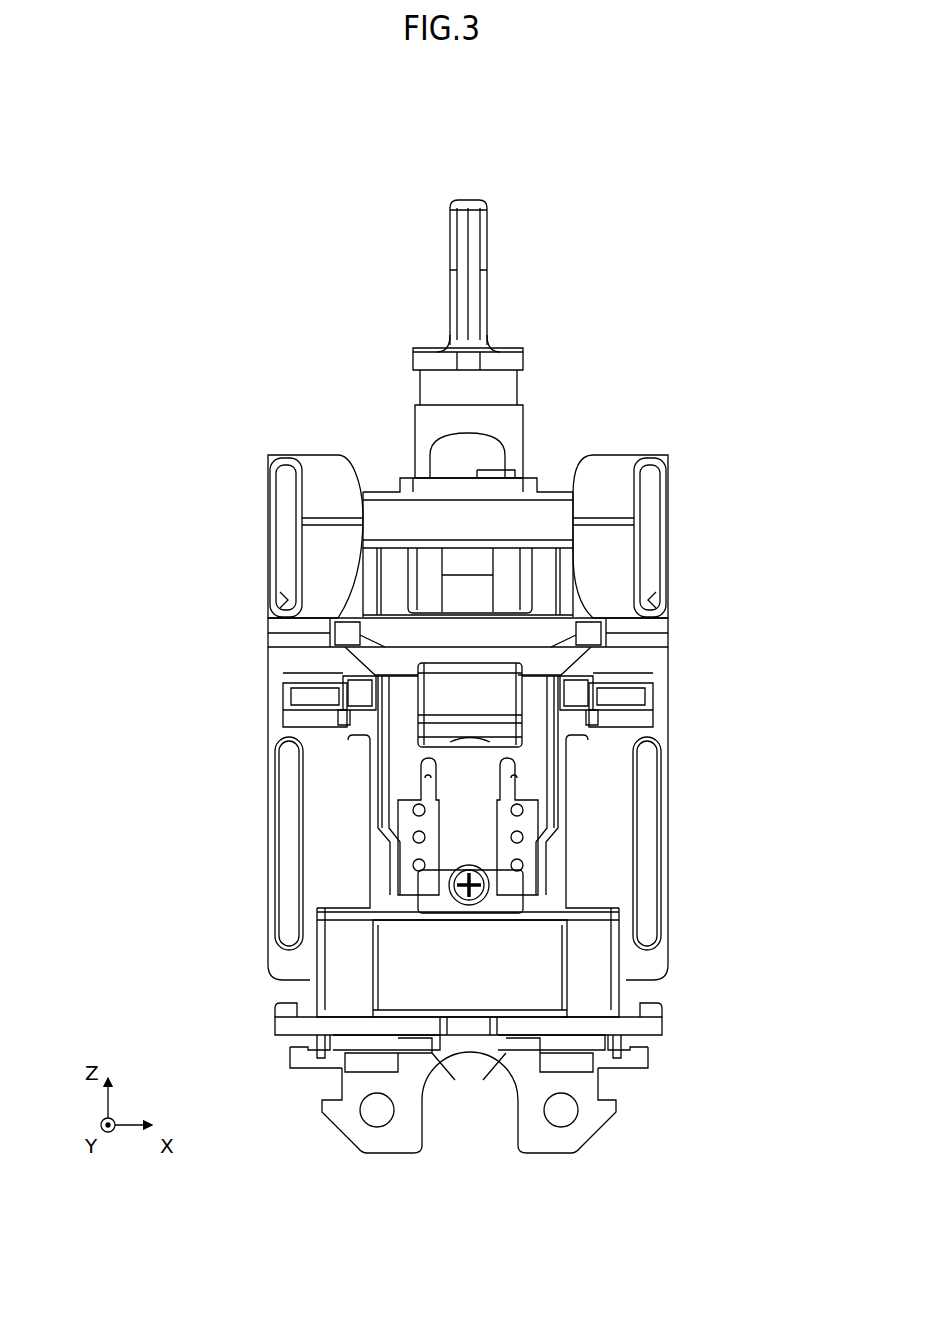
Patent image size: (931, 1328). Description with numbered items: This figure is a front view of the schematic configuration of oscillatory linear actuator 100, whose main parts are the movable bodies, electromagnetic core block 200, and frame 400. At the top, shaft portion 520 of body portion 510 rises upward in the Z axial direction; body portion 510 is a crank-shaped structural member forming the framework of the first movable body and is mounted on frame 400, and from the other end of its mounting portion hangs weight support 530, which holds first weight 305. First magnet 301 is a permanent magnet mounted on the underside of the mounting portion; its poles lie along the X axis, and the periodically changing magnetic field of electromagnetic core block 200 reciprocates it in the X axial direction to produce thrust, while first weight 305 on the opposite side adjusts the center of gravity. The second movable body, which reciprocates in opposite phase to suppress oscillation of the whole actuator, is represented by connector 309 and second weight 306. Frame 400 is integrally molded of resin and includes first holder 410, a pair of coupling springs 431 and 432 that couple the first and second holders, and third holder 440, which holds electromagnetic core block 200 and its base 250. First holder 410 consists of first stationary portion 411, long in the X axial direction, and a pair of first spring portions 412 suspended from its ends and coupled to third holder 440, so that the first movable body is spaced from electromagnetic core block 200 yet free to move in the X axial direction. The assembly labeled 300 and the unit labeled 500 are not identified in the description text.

The oscillatory linear actuator 100 is at (260, 238).
The electromagnetic core block 200 is at (637, 1180).
The base 250 is at (635, 1068).
The operating unit 300 is at (303, 355).
The first magnet 301 is at (368, 698).
The first weight 305 is at (408, 957).
The second weight 306 is at (458, 495).
The connector 309 is at (432, 583).
The frame 400 is at (694, 498).
The first holder 410 is at (243, 910).
The first stationary portion 411 is at (470, 757).
The first spring portions 412 is at (268, 833).
The coupling spring 431 is at (320, 480).
The coupling spring 432 is at (610, 495).
The third holder 440 is at (345, 935).
The contact unit 500 is at (366, 756).
The body portion 510 is at (398, 630).
The shaft portion 520 is at (465, 248).
The weight support 530 is at (398, 777).